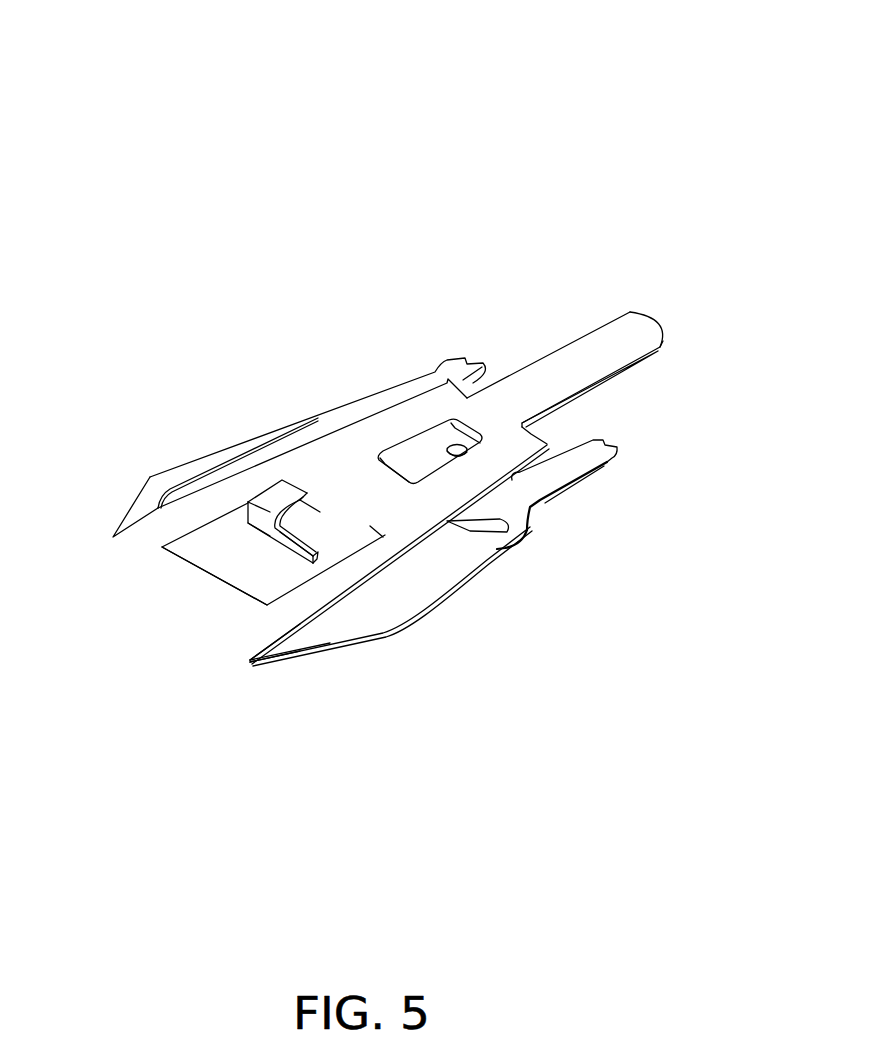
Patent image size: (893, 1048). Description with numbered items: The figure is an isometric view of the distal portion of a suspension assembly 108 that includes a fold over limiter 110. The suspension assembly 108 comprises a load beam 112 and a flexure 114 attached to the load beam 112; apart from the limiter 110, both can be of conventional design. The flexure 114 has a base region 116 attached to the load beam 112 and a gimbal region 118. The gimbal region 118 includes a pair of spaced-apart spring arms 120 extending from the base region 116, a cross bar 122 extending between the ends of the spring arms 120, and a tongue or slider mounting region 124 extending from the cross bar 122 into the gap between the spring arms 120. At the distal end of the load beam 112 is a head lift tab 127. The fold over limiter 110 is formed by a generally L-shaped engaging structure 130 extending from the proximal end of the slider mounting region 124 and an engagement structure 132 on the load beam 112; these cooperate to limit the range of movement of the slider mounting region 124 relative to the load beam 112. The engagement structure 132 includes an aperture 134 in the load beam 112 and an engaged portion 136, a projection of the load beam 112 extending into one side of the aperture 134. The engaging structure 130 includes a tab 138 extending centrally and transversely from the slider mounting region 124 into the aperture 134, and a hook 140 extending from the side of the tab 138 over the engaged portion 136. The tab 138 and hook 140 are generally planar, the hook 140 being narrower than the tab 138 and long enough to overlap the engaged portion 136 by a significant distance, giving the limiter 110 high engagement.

The suspension assembly 108 is at (467, 240).
The fold over limiter 110 is at (338, 484).
The load beam 112 is at (212, 633).
The flexure 114 is at (400, 395).
The base region 116 is at (277, 655).
The gimbal region 118 is at (488, 587).
The spring arms 120 is at (160, 481).
The cross bar 122 is at (488, 507).
The slider mounting region 124 is at (383, 537).
The head lift tab 127 is at (647, 330).
The engaging structure 130 is at (262, 530).
The engagement structure 132 is at (318, 505).
The aperture 134 is at (248, 570).
The engaged portion 136 is at (328, 543).
The tab 138 is at (290, 543).
The hook 140 is at (278, 492).